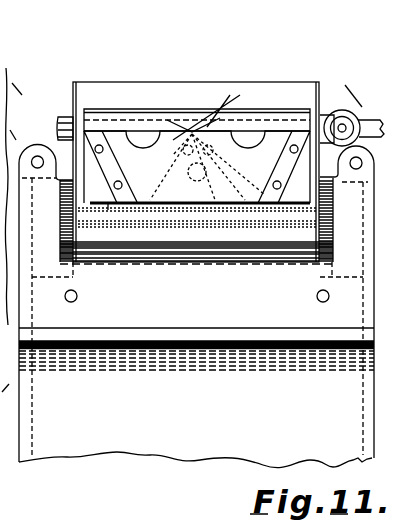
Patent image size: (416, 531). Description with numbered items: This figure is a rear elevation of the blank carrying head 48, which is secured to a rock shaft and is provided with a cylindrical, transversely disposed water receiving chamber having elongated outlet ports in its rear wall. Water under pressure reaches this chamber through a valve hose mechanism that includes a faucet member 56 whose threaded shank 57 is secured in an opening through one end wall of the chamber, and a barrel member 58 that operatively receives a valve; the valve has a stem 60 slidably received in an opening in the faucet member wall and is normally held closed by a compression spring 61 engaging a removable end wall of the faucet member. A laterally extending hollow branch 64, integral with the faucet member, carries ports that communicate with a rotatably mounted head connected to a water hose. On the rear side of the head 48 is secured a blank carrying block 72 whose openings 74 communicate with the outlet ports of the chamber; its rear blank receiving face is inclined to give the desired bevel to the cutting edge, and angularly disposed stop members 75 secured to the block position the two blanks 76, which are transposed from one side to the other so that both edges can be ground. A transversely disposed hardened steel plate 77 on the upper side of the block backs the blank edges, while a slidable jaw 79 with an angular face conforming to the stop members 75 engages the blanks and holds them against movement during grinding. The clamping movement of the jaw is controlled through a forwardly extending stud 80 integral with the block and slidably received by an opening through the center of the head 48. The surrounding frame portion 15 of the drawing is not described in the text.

The frame 15 is at (367, 435).
The blank carrying head 48 is at (196, 163).
The faucet member 56 is at (365, 98).
The threaded shank 57 is at (310, 177).
The barrel member 58 is at (353, 113).
The stem 60 is at (258, 270).
The compression spring 61 is at (21, 125).
The hollow branch 64 is at (375, 120).
The blank carrying block 72 is at (107, 202).
The openings 74 is at (22, 79).
The stop members 75 is at (12, 92).
The blanks 76 is at (160, 95).
The hardened steel plate 77 is at (110, 113).
The slidable jaw 79 is at (58, 128).
The stud 80 is at (200, 208).